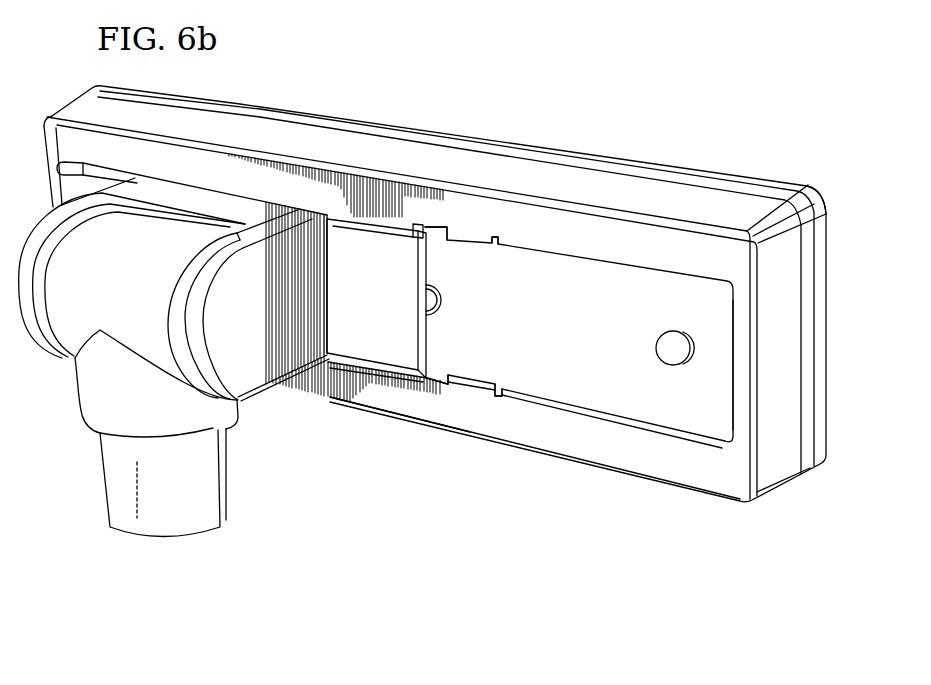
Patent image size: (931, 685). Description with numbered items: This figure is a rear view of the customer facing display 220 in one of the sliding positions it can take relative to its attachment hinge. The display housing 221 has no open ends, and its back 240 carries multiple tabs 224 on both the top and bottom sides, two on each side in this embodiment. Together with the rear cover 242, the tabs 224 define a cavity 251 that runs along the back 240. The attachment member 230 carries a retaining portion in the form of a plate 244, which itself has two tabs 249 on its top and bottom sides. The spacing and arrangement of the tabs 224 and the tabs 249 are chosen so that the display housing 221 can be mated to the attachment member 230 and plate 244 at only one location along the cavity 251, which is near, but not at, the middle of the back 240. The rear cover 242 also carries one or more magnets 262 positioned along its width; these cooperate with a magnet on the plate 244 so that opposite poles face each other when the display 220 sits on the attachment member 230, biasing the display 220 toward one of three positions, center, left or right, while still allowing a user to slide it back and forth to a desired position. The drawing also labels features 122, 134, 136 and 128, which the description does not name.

The display 220 is at (688, 133).
The display housing 221 is at (822, 193).
The recessed panel 122 is at (627, 284).
The tabs 224 is at (486, 248).
The tabs 249 is at (437, 226).
The plate 244 is at (392, 296).
The magnets 262 is at (442, 292).
The back of the display housing 240 is at (468, 433).
The rear cover 242 is at (628, 404).
The cavity 251 is at (680, 402).
The duct 134 is at (121, 294).
The flange ring 136 is at (226, 280).
The attachment member 230 is at (62, 357).
The stem 128 is at (107, 478).